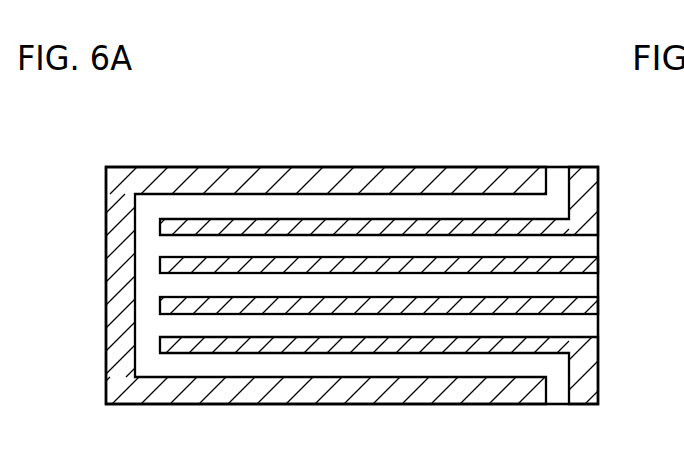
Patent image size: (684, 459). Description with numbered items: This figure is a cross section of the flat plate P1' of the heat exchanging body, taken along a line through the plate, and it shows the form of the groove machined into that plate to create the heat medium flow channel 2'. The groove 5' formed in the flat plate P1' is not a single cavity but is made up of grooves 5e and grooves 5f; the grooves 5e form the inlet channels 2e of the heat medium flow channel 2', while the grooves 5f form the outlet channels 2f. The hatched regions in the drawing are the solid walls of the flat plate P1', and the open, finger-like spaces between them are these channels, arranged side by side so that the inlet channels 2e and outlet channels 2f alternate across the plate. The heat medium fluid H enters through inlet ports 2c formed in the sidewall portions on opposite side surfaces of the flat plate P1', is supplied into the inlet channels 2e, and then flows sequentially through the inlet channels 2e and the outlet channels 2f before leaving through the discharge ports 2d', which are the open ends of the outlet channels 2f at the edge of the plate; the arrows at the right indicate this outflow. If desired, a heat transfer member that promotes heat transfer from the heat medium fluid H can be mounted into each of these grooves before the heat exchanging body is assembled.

The flat plate P1' is at (326, 242).
The groove 5' is at (352, 238).
The heat medium flow channel 2' is at (352, 238).
The grooves 5f is at (379, 221).
The outlet channels 2f is at (362, 328).
The grooves 5e is at (472, 238).
The inlet channels 2e is at (427, 362).
The heat medium fluid H is at (557, 167).
The inlet ports 2c is at (563, 168).
The discharge ports 2d' is at (633, 269).